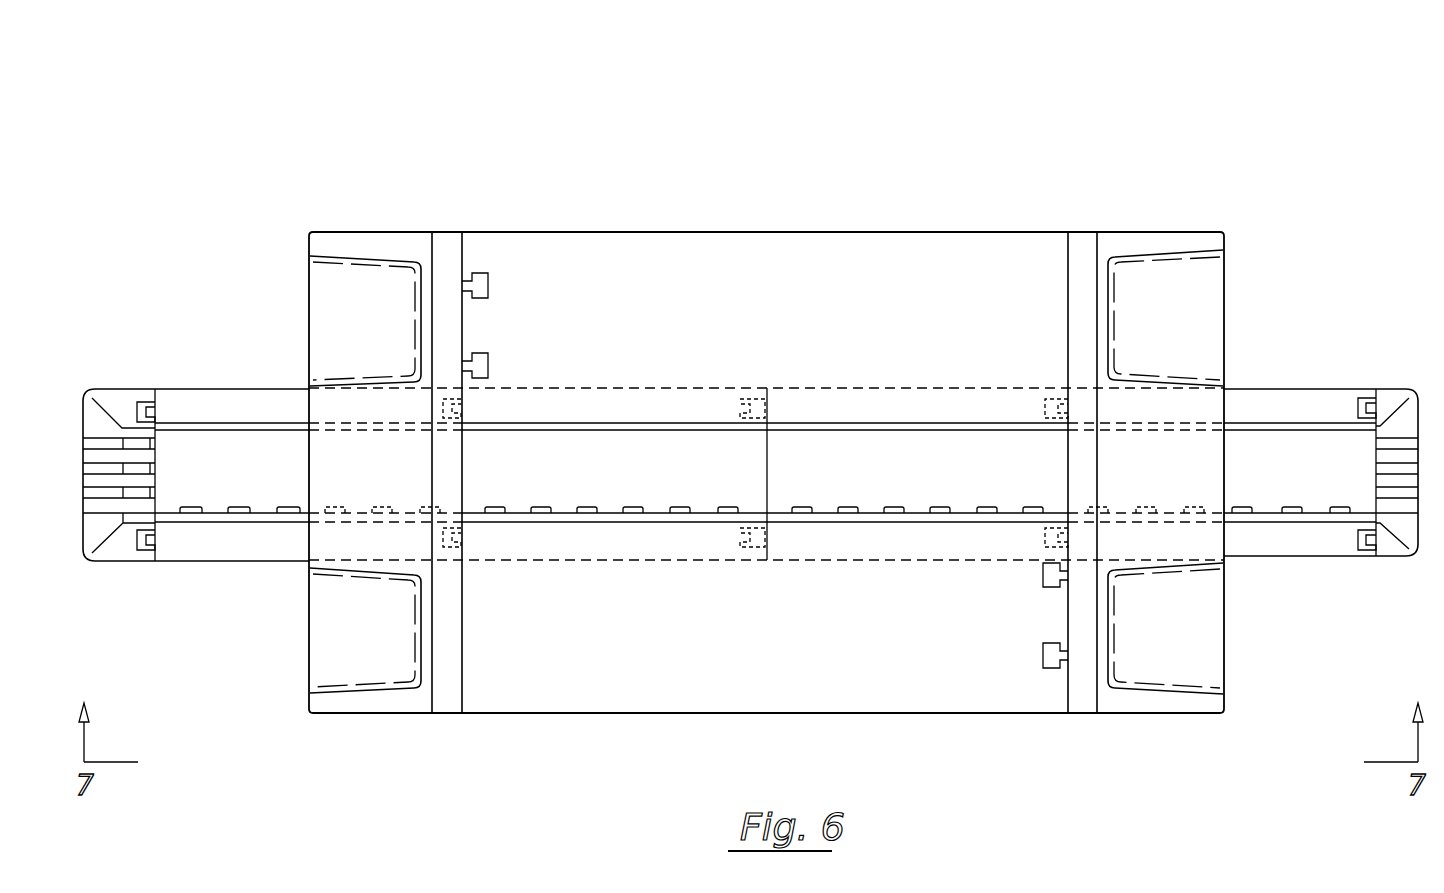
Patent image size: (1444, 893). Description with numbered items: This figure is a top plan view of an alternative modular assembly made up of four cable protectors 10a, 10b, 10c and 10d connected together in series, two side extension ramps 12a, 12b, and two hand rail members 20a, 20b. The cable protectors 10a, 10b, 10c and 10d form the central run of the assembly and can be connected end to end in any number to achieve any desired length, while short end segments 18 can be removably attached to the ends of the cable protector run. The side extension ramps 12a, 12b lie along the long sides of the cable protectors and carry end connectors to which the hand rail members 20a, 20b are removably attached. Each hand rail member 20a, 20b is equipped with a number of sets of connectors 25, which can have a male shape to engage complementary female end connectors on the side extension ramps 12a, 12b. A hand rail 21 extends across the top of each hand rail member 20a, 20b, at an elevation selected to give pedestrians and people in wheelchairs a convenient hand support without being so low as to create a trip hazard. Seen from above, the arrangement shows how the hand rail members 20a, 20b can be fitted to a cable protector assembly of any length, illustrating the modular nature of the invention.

The cable protector 10a is at (177, 358).
The cable protector 10b is at (590, 462).
The cable protector 10c is at (845, 462).
The cable protector 10d is at (1310, 355).
The side extension ramp 12a is at (920, 668).
The side extension ramp 12b is at (898, 282).
The end segment 18 is at (124, 555).
The hand rail member 20a is at (376, 205).
The hand rail member 20b is at (1113, 197).
The hand rail 21 is at (446, 459).
The connector 25 is at (486, 355).